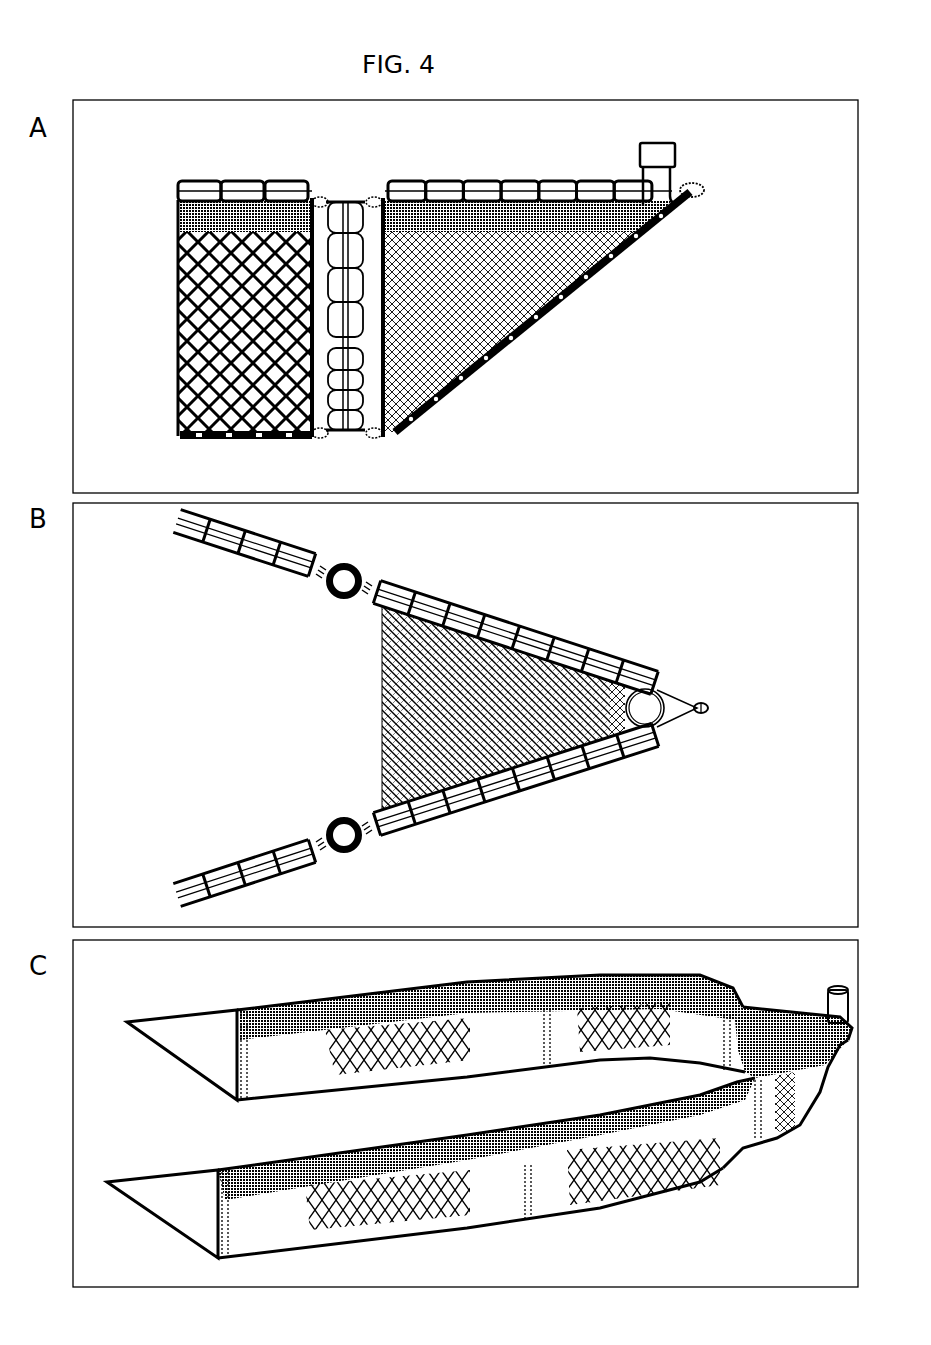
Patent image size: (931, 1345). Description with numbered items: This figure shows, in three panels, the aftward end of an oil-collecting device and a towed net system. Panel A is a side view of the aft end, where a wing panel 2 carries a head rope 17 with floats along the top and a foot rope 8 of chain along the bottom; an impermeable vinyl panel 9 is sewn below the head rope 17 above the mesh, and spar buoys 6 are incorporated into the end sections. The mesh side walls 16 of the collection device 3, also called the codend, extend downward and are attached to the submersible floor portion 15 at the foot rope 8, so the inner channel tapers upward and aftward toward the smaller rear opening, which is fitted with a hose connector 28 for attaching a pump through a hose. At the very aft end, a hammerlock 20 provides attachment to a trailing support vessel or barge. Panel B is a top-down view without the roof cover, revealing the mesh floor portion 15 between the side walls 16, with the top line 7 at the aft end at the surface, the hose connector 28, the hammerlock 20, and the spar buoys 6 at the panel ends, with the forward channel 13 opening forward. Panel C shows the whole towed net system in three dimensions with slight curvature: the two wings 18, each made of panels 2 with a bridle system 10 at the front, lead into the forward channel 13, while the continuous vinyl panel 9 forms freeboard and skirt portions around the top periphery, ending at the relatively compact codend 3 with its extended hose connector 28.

The panel 2 is at (130, 325).
The collection device 3 is at (627, 343).
The spar buoys 6 is at (347, 186).
The top line 7 is at (675, 690).
The foot rope 8 is at (245, 457).
The impermeable vinyl panel 9 is at (173, 213).
The bridle system 10 is at (163, 1008).
The forward channel 13 is at (178, 710).
The submersible floor portion 15 is at (458, 680).
The side walls 16 is at (434, 340).
The head rope 17 is at (208, 174).
The wings 18 is at (478, 1240).
The aft end hammerlock 20 is at (714, 190).
The hose connector 28 is at (654, 133).